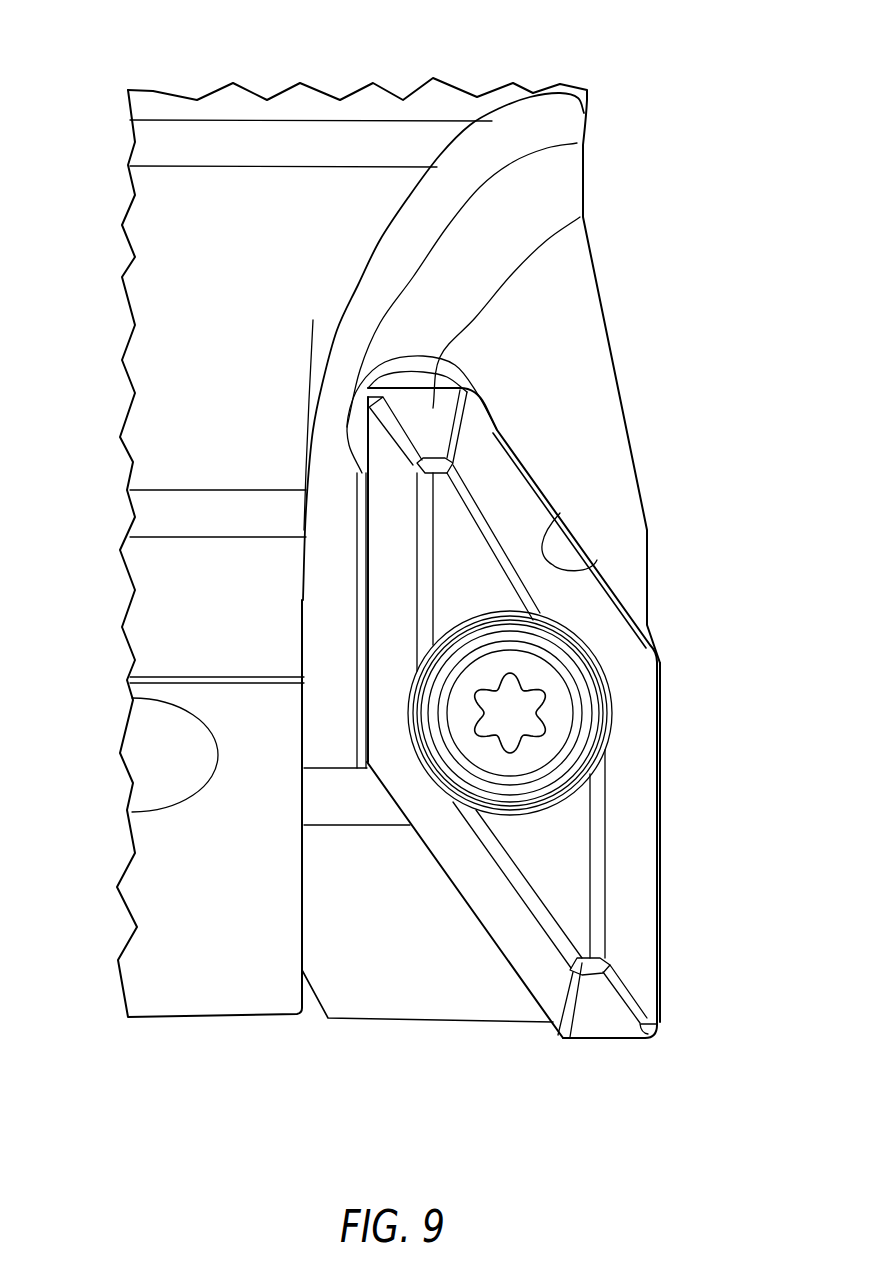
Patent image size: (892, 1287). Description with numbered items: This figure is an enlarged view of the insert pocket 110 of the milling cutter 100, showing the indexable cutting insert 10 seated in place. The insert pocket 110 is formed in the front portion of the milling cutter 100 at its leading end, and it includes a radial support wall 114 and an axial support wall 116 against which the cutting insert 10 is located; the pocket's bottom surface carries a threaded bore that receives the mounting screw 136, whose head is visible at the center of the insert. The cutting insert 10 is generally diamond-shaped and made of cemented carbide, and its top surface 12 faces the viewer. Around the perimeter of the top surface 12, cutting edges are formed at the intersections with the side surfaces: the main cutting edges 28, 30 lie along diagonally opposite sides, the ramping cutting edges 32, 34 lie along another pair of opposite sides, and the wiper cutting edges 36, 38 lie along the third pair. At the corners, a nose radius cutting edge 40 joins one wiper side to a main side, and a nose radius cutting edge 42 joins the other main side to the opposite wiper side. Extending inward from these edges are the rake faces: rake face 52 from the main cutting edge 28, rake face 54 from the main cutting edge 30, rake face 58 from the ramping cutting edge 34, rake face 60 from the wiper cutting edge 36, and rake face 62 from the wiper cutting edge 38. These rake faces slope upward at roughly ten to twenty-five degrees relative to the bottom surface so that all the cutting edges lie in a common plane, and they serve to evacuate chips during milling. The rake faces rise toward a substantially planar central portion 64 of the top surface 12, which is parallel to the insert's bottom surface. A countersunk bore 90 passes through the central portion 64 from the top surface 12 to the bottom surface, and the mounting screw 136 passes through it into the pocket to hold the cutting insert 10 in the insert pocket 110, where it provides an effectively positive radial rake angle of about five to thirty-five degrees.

The milling cutter 100 is at (50, 71).
The cutting insert 10 is at (560, 517).
The top surface 12 is at (503, 597).
The main cutting edge 28 is at (363, 560).
The main cutting edge 30 is at (660, 877).
The ramping cutting edge 32 is at (457, 893).
The ramping cutting edge 34 is at (597, 560).
The wiper cutting edge 36 is at (600, 1040).
The wiper cutting edge 38 is at (402, 378).
The nose radius cutting edge 40 is at (655, 1033).
The nose radius cutting edge 42 is at (378, 400).
The rake face 52 is at (367, 618).
The rake face 54 is at (642, 931).
The rake face 58 is at (513, 497).
The rake face 60 is at (592, 1017).
The rake face 62 is at (430, 395).
The central portion 64 is at (463, 556).
The countersunk bore 90 is at (478, 640).
The insert pocket 110 is at (345, 507).
The radial support wall 114 is at (408, 697).
The axial support wall 116 is at (597, 560).
The mounting screw 136 is at (580, 735).